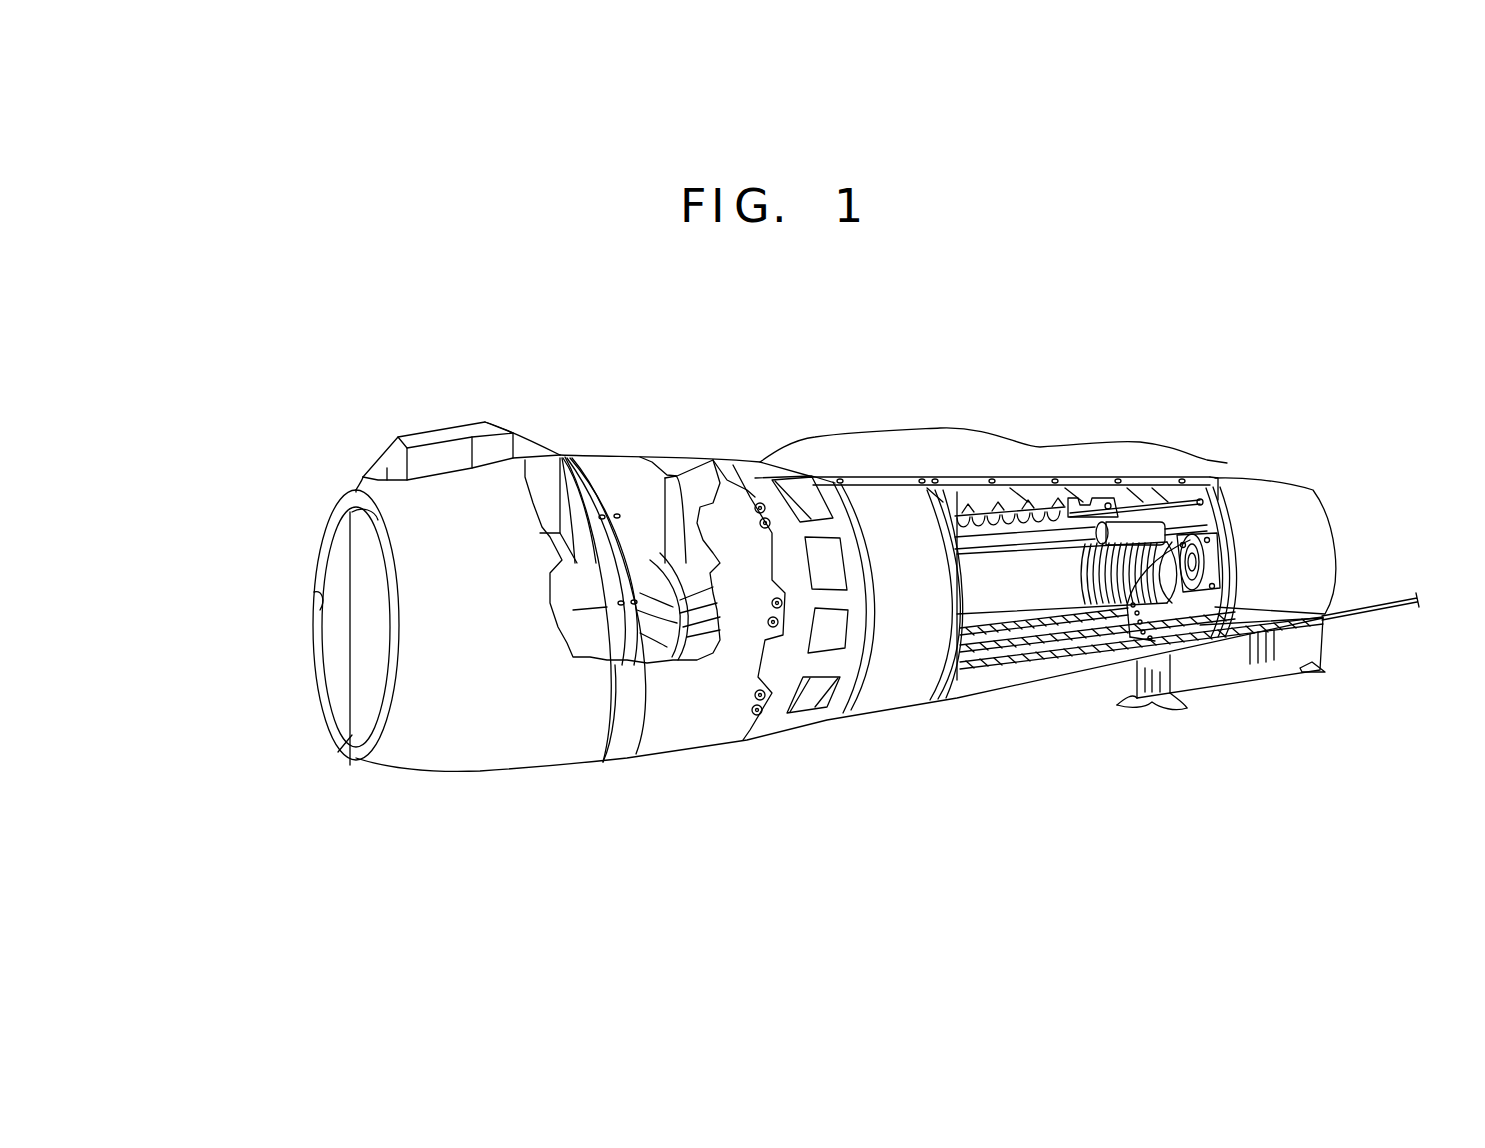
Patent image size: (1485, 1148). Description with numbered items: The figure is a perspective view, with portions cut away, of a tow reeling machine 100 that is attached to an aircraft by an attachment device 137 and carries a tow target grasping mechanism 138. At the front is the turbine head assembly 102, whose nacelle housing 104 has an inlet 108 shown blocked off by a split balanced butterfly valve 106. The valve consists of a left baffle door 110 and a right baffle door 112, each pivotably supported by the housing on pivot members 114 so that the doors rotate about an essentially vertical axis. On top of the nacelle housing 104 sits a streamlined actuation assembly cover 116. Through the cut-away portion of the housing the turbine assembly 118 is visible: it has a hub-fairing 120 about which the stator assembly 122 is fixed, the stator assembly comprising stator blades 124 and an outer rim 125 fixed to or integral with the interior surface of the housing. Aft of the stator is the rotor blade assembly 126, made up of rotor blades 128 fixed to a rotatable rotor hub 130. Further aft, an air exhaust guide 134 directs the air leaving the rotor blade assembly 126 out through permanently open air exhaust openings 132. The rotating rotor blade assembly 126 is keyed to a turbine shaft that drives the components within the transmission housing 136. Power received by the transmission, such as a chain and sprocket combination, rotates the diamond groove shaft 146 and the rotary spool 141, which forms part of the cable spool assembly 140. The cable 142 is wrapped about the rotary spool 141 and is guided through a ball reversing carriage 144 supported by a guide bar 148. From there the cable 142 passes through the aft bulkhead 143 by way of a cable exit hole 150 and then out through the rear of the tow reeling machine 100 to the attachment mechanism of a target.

The tow reeling machine 100 is at (343, 448).
The turbine head assembly 102 is at (573, 770).
The nacelle housing 104 is at (480, 740).
The split balanced butterfly valve 106 is at (360, 635).
The inlet 108 is at (313, 617).
The left baffle door 110 is at (337, 558).
The right baffle door 112 is at (360, 752).
The pivot members 114 is at (345, 540).
The stream lined actuation assembly cover 116 is at (432, 430).
The turbine assembly 118 is at (588, 596).
The hub-fairing 120 is at (557, 563).
The stator assembly 122 is at (564, 482).
The stator blades 124 is at (596, 512).
The outer rim 125 is at (686, 497).
The rotor blade assembly 126 is at (687, 650).
The rotor blades 128 is at (650, 548).
The rotor hub 130 is at (680, 588).
The air exhaust openings 132 is at (840, 577).
The air exhaust guide 134 is at (812, 492).
The transmission housing 136 is at (933, 633).
The attachment device 137 is at (1127, 490).
The tow target grasping mechanism 138 is at (1130, 663).
The cable spool assembly 140 is at (1007, 630).
The rotary spool 141 is at (1040, 603).
The cable 142 is at (1163, 513).
The aft bulkhead 143 is at (1183, 612).
The ball reversing carriage 144 is at (1097, 498).
The diamond groove shaft 146 is at (1000, 515).
The guide bar 148 is at (983, 553).
The cable exit hole 150 is at (1247, 487).